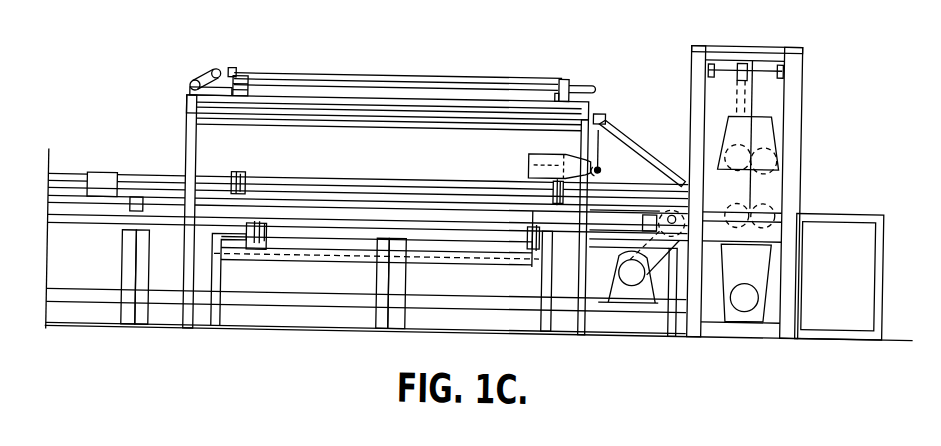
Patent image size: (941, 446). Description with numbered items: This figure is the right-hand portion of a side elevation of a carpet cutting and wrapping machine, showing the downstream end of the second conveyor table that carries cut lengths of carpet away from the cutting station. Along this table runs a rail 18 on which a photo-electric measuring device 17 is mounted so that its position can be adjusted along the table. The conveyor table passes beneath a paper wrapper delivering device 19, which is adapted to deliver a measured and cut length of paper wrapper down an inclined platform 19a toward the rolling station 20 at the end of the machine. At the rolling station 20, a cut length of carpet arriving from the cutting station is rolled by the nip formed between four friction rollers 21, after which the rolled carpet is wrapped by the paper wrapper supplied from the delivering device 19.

The photo-electric measuring device 17 is at (97, 187).
The rail 18 is at (147, 191).
The paper wrapper delivering device 19 is at (410, 70).
The inclined platform 19a is at (632, 142).
The rolling station 20 is at (812, 116).
The friction rollers 21 is at (772, 198).